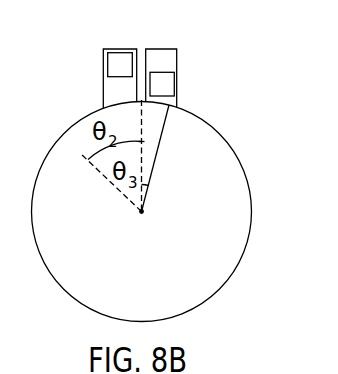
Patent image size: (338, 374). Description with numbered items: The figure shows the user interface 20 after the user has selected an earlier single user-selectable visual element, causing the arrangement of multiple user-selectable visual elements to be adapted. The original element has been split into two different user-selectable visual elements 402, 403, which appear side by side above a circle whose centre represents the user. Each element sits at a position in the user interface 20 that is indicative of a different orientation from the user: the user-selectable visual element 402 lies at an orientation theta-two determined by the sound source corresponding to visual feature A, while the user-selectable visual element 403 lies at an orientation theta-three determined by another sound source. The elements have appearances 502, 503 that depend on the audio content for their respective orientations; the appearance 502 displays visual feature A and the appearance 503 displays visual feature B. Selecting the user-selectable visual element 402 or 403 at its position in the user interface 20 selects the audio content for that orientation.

The user interface 20 is at (244, 140).
The user-selectable visual element 402 is at (120, 49).
The user-selectable visual element 403 is at (147, 49).
The appearance 502 is at (108, 68).
The appearance 503 is at (174, 80).